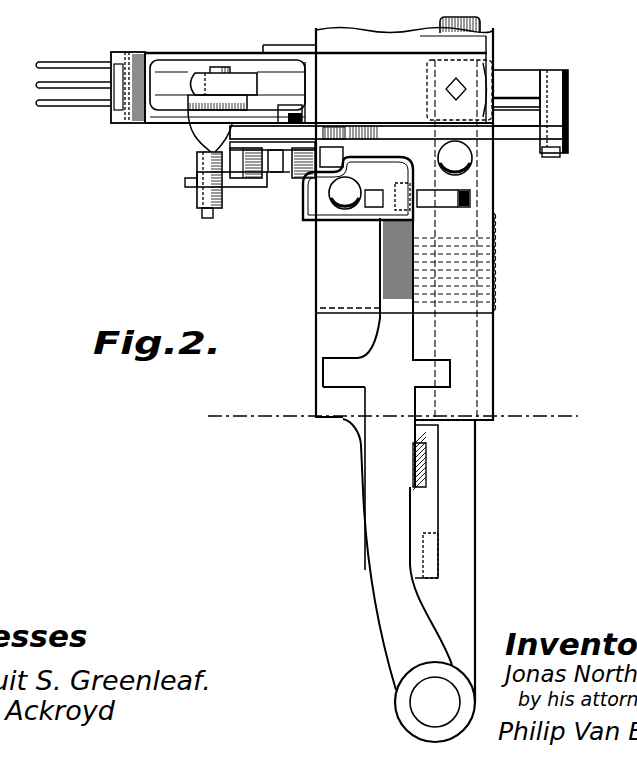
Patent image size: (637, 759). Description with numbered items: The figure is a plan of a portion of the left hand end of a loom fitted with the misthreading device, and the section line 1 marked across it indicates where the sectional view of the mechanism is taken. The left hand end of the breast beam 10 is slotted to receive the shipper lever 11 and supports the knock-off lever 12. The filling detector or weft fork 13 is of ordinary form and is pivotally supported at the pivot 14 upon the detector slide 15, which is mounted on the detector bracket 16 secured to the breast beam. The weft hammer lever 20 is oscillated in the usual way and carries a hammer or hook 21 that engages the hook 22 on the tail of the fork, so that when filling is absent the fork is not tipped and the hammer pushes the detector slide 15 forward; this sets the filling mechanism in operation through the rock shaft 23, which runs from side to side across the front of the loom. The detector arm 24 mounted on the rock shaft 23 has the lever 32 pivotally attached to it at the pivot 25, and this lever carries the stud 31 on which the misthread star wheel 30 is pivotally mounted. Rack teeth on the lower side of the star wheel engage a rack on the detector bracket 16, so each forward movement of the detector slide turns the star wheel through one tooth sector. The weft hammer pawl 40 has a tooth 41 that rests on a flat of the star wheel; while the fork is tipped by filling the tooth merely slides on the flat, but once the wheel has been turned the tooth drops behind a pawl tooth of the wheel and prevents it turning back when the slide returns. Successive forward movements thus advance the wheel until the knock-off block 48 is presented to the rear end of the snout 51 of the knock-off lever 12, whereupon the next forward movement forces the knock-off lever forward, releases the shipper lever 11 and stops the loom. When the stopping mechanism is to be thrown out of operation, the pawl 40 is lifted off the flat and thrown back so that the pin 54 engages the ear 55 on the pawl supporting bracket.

The section line 1 is at (204, 424).
The breast beam 10 is at (316, 263).
The shipper lever 11 is at (427, 467).
The knock-off lever 12 is at (400, 404).
The filling detector or weft fork 13 is at (46, 107).
The pivot 14 is at (128, 52).
The detector slide 15 is at (226, 55).
The detector bracket 16 is at (343, 48).
The weft hammer lever 20 is at (200, 128).
The hammer or hook 21 is at (247, 88).
The hook 22 is at (243, 102).
The rock shaft 23 is at (480, 28).
The detector arm 24 is at (570, 97).
The pivot 25 is at (542, 86).
The misthread star wheel 30 is at (290, 148).
The stud 31 is at (302, 108).
The lever 32 is at (388, 136).
The weft hammer pawl 40 is at (248, 179).
The tooth 41 is at (270, 174).
The knock-off block 48 is at (277, 173).
The snout 51 is at (365, 173).
The pin 54 is at (200, 172).
The ear 55 is at (190, 183).